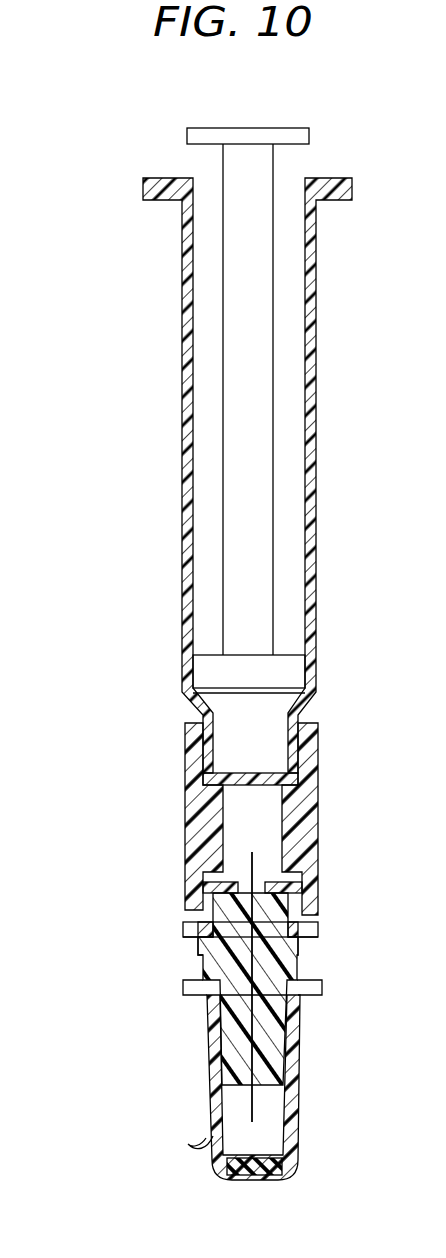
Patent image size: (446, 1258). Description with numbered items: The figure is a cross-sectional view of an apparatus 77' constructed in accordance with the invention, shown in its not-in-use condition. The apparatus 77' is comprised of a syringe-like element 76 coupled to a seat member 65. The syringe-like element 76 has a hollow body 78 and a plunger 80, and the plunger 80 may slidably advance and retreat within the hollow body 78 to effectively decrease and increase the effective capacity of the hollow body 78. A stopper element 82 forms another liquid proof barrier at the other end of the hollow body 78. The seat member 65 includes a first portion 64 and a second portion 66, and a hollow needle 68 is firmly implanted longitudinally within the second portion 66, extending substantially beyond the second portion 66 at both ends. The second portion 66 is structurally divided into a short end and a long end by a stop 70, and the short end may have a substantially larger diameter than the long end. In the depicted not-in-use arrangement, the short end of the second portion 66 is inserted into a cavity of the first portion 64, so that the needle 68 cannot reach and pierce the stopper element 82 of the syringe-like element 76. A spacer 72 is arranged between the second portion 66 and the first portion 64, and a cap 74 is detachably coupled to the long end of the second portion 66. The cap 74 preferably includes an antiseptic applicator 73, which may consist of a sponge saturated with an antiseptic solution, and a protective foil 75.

The plunger 80 is at (243, 134).
The syringe-like element 76 is at (108, 341).
The hollow body 78 is at (183, 497).
The apparatus 77' is at (208, 819).
The stopper element 82 is at (260, 773).
The first portion 64 is at (190, 806).
The hollow needle 68 is at (252, 852).
The seat member 65 is at (383, 848).
The spacer 72 is at (318, 930).
The stop 70 is at (318, 948).
The second portion 66 is at (282, 1025).
The cap 74 is at (300, 1120).
The protective foil 75 is at (200, 1143).
The antiseptic applicator 73 is at (242, 1180).